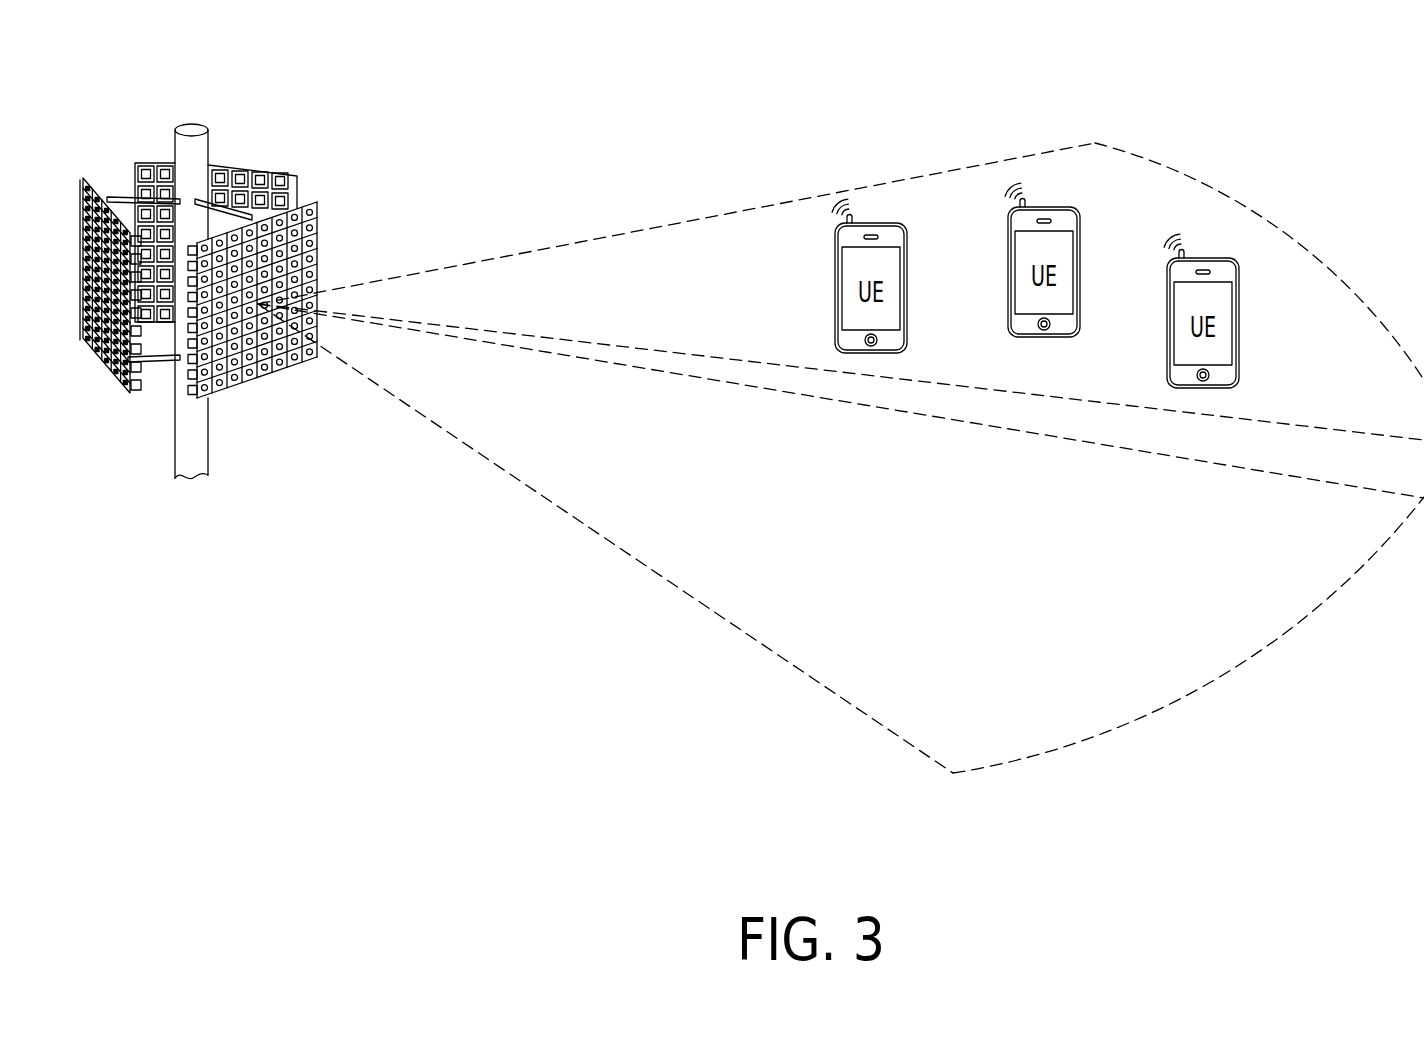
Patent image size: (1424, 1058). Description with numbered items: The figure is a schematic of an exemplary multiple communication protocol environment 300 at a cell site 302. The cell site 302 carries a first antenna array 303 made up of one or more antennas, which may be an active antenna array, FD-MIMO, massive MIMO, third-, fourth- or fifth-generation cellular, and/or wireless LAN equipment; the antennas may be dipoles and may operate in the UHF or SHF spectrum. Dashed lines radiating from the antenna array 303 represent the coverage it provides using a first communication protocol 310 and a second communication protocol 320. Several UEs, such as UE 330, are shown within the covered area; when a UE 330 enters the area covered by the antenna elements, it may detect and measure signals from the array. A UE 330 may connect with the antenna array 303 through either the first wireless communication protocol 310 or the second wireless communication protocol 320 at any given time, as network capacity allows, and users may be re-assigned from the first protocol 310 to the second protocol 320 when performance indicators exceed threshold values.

The multiple communication protocol environment 300 is at (1366, 117).
The cell site 302 is at (187, 122).
The first antenna array 303 is at (324, 228).
The first communication protocol 310 is at (1358, 265).
The second communication protocol 320 is at (1219, 698).
The UE 330 is at (1089, 253).